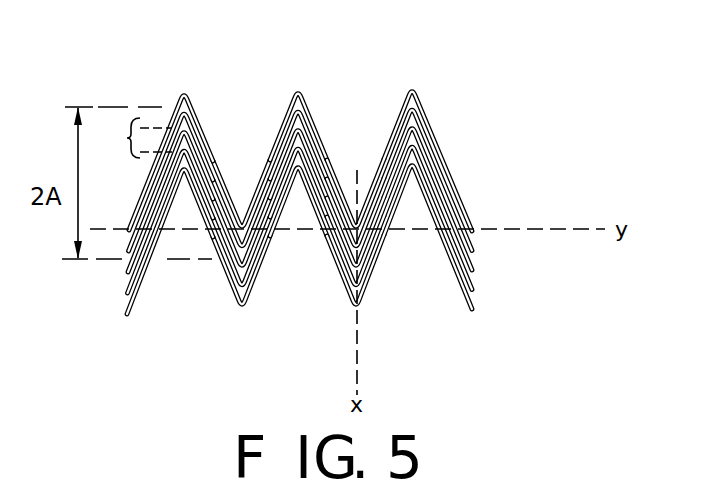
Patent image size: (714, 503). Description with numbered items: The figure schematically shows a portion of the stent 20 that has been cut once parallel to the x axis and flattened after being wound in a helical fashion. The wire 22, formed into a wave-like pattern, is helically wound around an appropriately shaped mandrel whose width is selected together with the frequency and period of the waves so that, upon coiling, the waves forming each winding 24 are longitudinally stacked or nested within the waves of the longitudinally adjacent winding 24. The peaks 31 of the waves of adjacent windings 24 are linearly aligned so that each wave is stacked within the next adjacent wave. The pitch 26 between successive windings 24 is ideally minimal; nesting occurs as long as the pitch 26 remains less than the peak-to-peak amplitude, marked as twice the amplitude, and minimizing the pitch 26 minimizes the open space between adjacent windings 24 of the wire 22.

The stent 20 is at (291, 185).
The wire 22 is at (198, 103).
The winding 24 is at (306, 103).
The pitch 26 is at (131, 138).
The peaks 31 is at (294, 87).